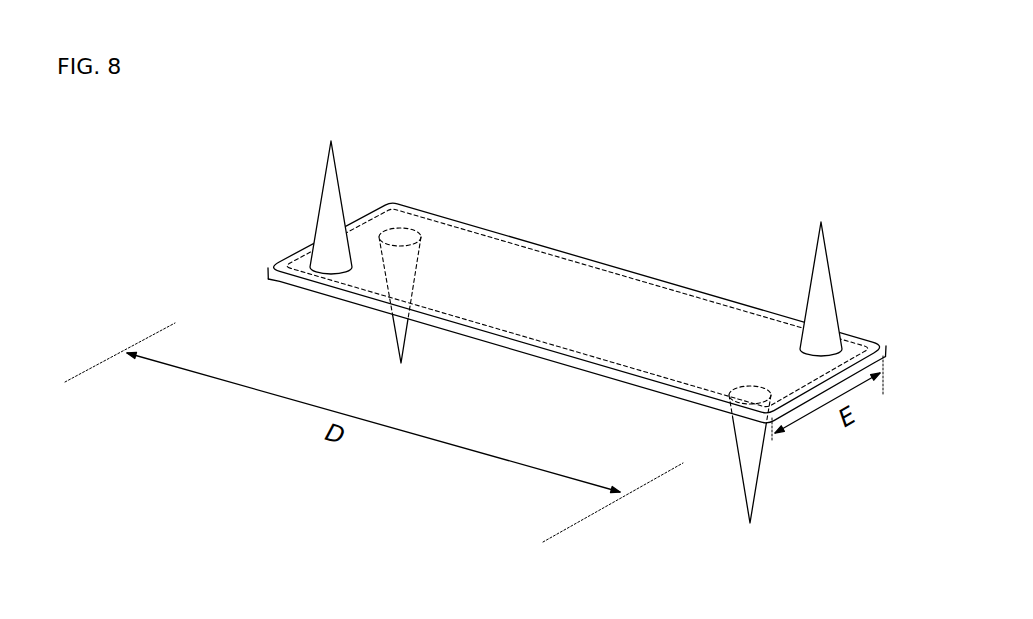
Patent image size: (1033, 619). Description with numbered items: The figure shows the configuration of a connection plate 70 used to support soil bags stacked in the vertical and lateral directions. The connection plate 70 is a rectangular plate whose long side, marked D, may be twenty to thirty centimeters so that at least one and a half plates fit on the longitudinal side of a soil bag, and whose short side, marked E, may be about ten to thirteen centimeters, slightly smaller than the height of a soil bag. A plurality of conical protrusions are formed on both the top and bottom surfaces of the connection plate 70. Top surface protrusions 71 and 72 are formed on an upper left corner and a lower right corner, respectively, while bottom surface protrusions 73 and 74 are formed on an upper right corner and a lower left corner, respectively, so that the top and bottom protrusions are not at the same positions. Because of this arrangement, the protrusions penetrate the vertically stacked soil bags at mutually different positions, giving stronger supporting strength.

The connection plate 70 is at (583, 286).
The top surface protrusion 71 is at (317, 202).
The top surface protrusion 72 is at (843, 291).
The bottom surface protrusion 73 is at (393, 337).
The bottom surface protrusion 74 is at (760, 470).